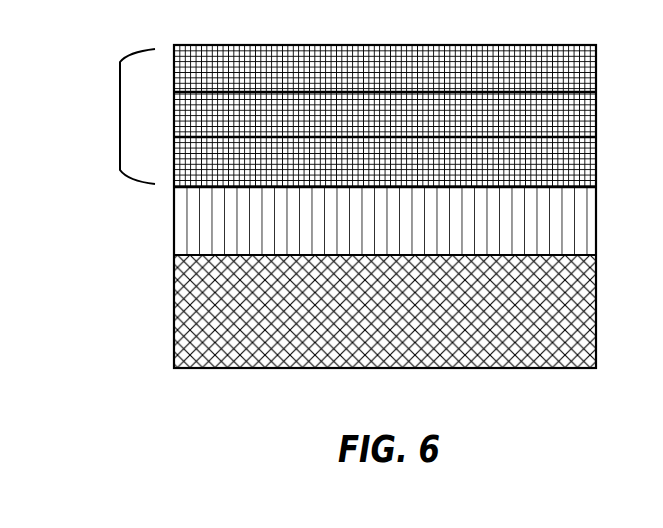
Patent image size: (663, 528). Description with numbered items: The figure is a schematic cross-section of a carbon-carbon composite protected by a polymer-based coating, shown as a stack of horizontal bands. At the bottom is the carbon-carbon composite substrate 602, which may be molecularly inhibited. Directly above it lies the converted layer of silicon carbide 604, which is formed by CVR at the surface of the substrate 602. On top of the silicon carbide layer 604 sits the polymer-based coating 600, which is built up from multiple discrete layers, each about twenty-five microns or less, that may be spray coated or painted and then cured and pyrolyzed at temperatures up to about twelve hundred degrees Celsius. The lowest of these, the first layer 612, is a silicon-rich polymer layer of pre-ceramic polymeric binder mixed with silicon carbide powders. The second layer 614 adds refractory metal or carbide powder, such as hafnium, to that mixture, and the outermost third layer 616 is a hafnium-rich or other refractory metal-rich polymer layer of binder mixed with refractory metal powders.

The polymer-based coating 600 is at (120, 117).
The carbon-carbon composite substrate 602 is at (404, 322).
The converted layer of silicon carbide 604 is at (404, 239).
The first layer 612 is at (403, 172).
The second layer 614 is at (403, 126).
The third layer 616 is at (403, 81).